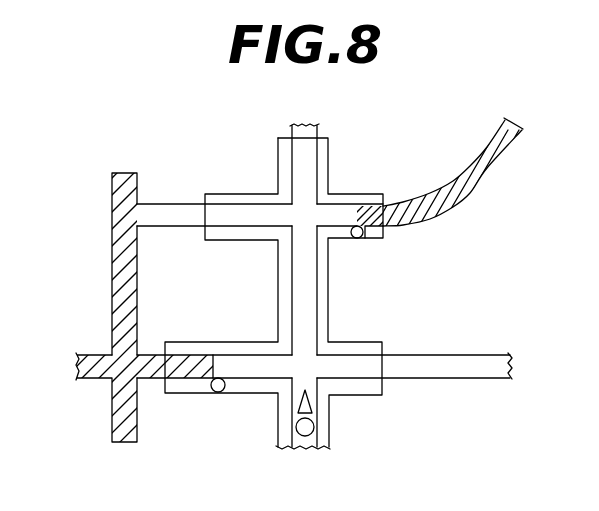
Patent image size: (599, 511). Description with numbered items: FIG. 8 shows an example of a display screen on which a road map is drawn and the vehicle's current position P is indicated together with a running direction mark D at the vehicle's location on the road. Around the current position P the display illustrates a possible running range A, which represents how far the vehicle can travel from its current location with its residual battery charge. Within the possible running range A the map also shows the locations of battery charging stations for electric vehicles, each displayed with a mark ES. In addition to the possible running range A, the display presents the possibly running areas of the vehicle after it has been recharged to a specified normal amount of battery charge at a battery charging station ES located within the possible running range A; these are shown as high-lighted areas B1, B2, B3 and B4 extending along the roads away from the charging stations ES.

The possible running range A is at (329, 310).
The high-lighted area B1 is at (186, 366).
The high-lighted area B2 is at (118, 268).
The high-lighted area B3 is at (120, 418).
The high-lighted area B4 is at (474, 191).
The battery charging station ES is at (286, 328).
The running direction mark D is at (312, 398).
The current position P is at (314, 428).